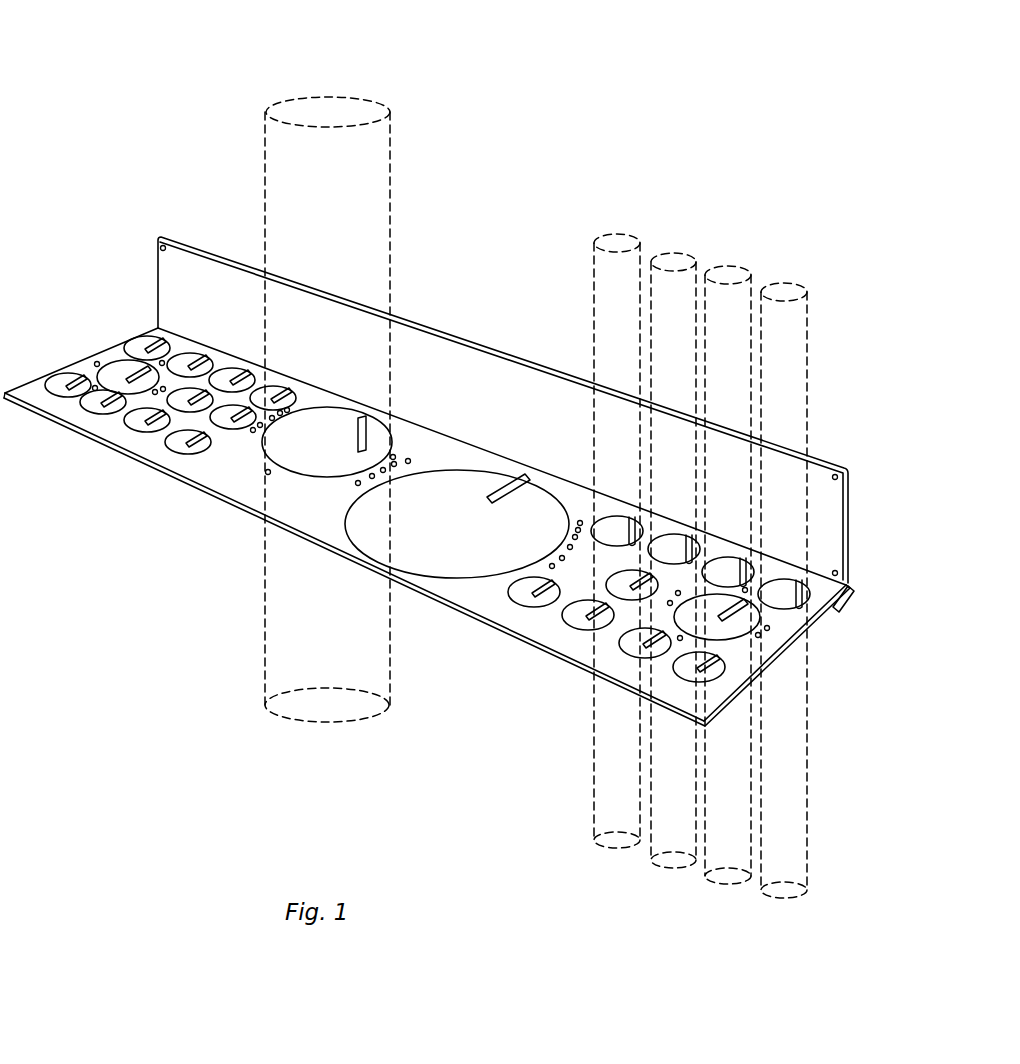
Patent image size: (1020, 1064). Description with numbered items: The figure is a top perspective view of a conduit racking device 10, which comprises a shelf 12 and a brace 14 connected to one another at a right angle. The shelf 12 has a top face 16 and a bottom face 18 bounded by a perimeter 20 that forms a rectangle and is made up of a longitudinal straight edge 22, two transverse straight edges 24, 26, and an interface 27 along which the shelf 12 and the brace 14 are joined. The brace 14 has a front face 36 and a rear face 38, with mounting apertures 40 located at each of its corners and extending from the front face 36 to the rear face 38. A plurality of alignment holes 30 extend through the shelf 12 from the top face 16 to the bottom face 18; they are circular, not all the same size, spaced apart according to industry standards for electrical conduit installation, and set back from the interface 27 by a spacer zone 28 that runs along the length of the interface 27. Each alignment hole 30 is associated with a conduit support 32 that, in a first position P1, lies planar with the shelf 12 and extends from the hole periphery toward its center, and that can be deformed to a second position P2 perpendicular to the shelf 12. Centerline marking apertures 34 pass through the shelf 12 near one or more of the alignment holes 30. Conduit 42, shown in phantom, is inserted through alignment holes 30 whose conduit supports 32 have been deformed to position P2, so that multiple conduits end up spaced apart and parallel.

The conduit racking device 10 is at (866, 328).
The shelf 12 is at (40, 403).
The brace 14 is at (513, 402).
The top face 16 is at (741, 654).
The bottom face 18 is at (727, 702).
The perimeter 20 is at (307, 543).
The longitudinal straight edge 22 is at (219, 496).
The transverse straight edge 24 is at (99, 348).
The transverse straight edge 26 is at (820, 625).
The interface 27 is at (440, 431).
The spacer zone 28 is at (846, 594).
The alignment holes 30 is at (160, 345).
The conduit supports 32 is at (262, 388).
The centerline marking apertures 34 is at (268, 472).
The front face 36 is at (821, 519).
The rear face 38 is at (852, 511).
The mounting apertures 40 is at (160, 248).
The conduit 42 is at (313, 172).
The first position P1 is at (486, 491).
The second position P2 is at (358, 432).